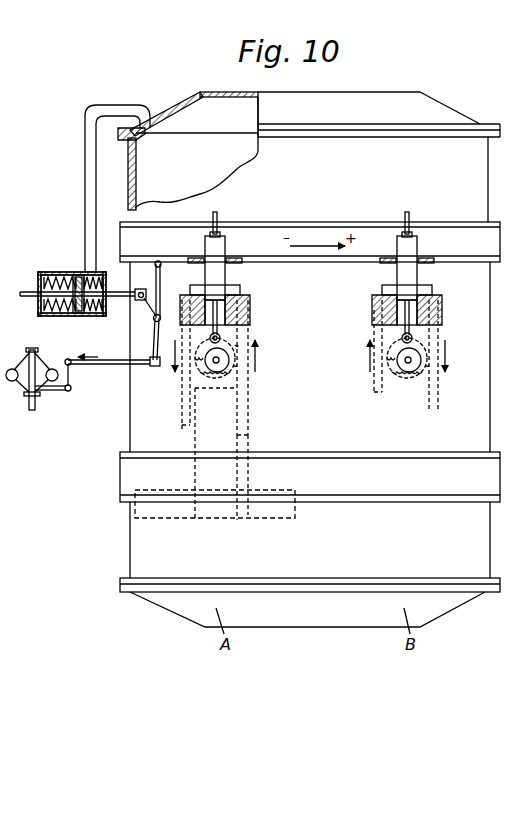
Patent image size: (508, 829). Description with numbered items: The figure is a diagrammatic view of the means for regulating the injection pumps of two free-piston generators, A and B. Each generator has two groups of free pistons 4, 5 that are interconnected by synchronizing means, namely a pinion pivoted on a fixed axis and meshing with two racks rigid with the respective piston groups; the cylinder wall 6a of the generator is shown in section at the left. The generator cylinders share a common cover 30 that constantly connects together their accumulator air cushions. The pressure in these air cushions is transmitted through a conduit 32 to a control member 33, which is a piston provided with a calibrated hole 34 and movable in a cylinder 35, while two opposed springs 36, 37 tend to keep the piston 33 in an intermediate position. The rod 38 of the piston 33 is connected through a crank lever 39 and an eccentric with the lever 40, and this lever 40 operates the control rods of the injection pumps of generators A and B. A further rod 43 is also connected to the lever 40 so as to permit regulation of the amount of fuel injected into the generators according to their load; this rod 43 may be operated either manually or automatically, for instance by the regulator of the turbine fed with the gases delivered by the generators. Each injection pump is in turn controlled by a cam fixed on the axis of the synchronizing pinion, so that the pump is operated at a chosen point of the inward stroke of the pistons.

The group of free pistons 4 is at (188, 430).
The group of free pistons 5 is at (180, 512).
The tank wall 6a is at (205, 120).
The common cover 30 is at (242, 94).
The conduit 32 is at (118, 105).
The control member 33 is at (78, 276).
The calibrated hole 34 is at (66, 313).
The cylinder 35 is at (38, 280).
The spring 36 is at (42, 310).
The spring 37 is at (100, 313).
The rod 38 is at (134, 307).
The crank lever 39 is at (164, 308).
The lever 40 is at (155, 284).
The rod 43 is at (110, 366).